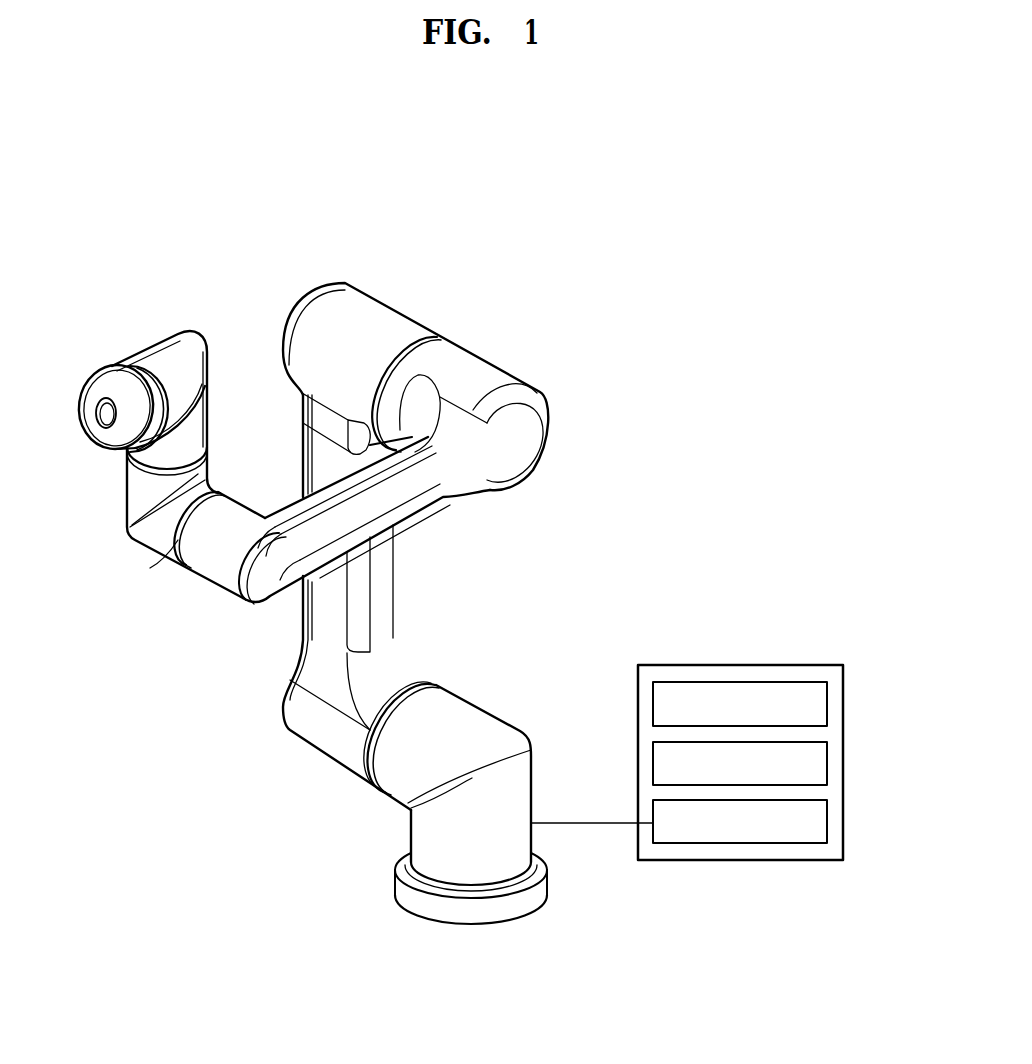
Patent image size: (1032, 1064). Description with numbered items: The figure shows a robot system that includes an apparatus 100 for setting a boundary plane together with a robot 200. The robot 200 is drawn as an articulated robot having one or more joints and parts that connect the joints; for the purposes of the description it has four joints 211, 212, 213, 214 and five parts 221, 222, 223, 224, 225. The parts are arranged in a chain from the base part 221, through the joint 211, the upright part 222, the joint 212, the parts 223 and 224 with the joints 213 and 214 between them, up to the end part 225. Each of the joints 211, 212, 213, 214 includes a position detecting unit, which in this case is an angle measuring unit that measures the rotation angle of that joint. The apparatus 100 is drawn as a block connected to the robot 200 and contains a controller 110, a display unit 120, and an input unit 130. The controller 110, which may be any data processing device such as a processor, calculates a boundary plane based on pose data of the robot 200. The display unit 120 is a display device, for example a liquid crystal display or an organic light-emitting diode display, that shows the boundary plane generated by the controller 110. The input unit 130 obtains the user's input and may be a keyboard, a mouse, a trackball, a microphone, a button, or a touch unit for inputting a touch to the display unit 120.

The apparatus for setting a boundary plane 100 is at (747, 665).
The controller 110 is at (828, 705).
The display unit 120 is at (828, 765).
The input unit 130 is at (828, 825).
The robot 200 is at (484, 183).
The joint 211 is at (403, 695).
The joint 212 is at (406, 350).
The joint 213 is at (172, 546).
The joint 214 is at (136, 452).
The part 221 is at (517, 784).
The part 222 is at (312, 468).
The part 223 is at (407, 507).
The part 224 is at (130, 510).
The part 225 is at (160, 342).